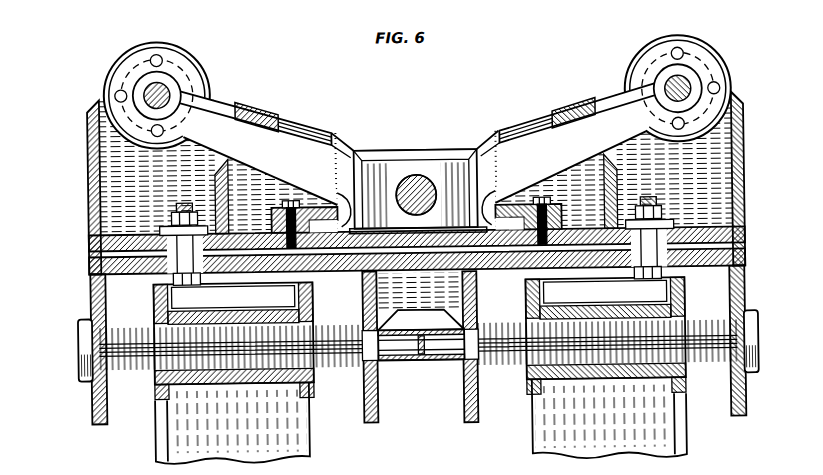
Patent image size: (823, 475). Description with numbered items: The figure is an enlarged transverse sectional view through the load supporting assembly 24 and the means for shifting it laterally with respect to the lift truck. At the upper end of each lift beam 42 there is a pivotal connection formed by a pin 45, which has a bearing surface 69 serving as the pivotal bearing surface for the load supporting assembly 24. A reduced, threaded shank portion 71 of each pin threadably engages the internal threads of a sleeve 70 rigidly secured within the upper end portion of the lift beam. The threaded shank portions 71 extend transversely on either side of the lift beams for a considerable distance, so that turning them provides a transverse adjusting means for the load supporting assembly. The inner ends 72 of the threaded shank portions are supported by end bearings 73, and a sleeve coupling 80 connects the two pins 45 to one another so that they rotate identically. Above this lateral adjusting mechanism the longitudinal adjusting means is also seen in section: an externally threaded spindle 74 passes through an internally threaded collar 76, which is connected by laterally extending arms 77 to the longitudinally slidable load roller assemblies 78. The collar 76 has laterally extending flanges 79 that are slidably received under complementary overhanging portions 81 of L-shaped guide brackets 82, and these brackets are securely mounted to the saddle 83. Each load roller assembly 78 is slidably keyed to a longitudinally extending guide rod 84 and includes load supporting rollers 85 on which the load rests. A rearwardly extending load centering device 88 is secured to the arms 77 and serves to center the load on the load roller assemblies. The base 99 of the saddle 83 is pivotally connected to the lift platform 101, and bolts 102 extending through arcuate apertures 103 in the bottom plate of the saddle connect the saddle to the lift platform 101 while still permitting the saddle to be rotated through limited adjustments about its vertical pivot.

The load supporting assembly 24 is at (389, 145).
The lift beam 42 is at (152, 448).
The pin 45 is at (77, 345).
The bearing surface 69 is at (105, 371).
The sleeve 70 is at (311, 319).
The threaded shank portion 71 is at (123, 323).
The inner end 72 is at (430, 363).
The end bearing 73 is at (361, 364).
The threaded spindle 74 is at (416, 178).
The collar 76 is at (446, 156).
The arm 77 is at (242, 141).
The load roller assembly 78 is at (171, 39).
The flange 79 is at (418, 200).
The sleeve coupling 80 is at (401, 363).
The overhanging portion 81 is at (324, 199).
The L-shaped guide bracket 82 is at (268, 220).
The saddle 83 is at (746, 150).
The guide rod 84 is at (144, 88).
The load supporting roller 85 is at (154, 39).
The load centering device 88 is at (288, 107).
The base 99 is at (107, 239).
The lift platform 101 is at (742, 278).
The bolt 102 is at (183, 202).
The arcuate aperture 103 is at (167, 241).